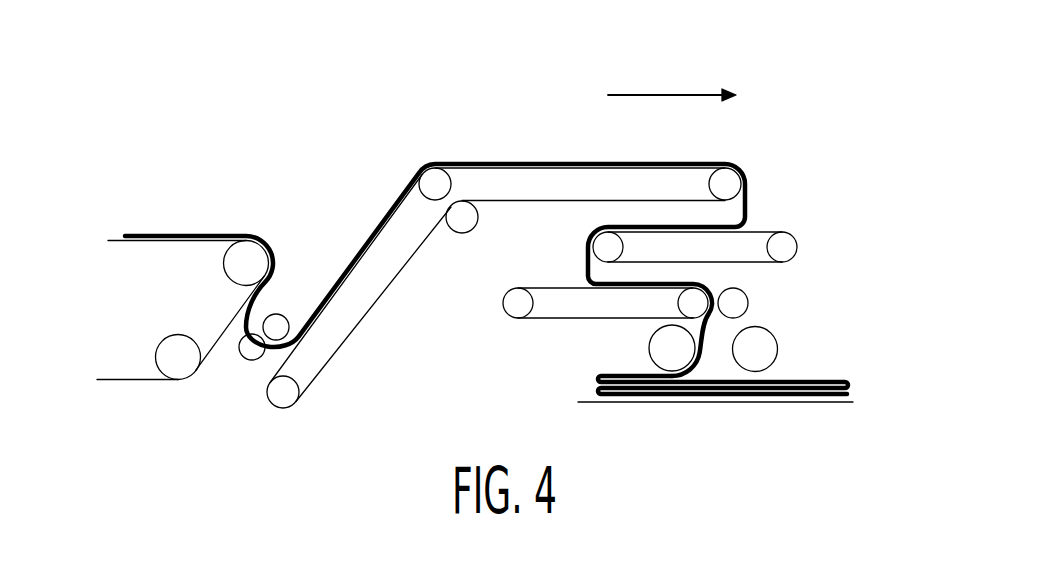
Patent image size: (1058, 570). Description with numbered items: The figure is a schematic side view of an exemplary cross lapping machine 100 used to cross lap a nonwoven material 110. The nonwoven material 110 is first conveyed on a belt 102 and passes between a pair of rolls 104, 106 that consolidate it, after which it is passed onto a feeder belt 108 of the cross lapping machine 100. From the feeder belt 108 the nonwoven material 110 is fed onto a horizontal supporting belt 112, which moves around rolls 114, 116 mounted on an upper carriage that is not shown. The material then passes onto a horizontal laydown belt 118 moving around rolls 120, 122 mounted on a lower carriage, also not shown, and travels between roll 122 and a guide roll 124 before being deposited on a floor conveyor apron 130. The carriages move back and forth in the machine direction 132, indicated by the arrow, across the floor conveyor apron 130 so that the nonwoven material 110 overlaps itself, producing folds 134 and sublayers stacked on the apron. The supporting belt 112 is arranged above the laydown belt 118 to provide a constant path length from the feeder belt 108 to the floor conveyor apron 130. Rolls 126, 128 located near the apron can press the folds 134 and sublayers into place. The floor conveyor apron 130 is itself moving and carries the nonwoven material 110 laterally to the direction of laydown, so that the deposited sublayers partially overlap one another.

The cross lapping machine 100 is at (388, 107).
The belt 102 is at (226, 330).
The roll 104 is at (277, 314).
The roll 106 is at (250, 360).
The feeder belt 108 is at (340, 347).
The nonwoven material 110 is at (196, 234).
The horizontal supporting belt 112 is at (763, 226).
The roll 114 is at (788, 247).
The roll 116 is at (624, 245).
The horizontal laydown belt 118 is at (558, 287).
The roll 120 is at (503, 306).
The roll 122 is at (677, 306).
The guide roll 124 is at (749, 303).
The roll 126 is at (662, 350).
The roll 128 is at (778, 349).
The floor conveyor apron 130 is at (590, 402).
The machine direction 132 is at (645, 95).
The folds 134 is at (847, 378).